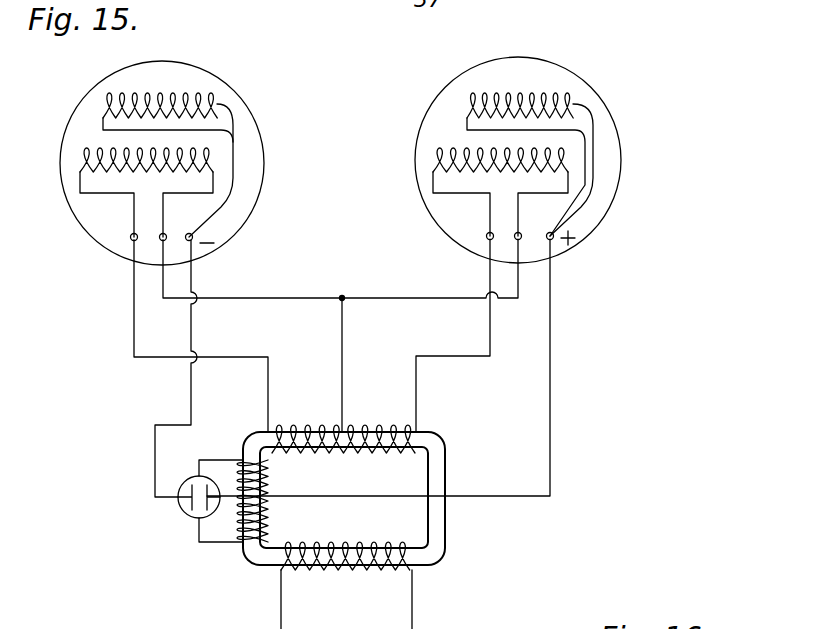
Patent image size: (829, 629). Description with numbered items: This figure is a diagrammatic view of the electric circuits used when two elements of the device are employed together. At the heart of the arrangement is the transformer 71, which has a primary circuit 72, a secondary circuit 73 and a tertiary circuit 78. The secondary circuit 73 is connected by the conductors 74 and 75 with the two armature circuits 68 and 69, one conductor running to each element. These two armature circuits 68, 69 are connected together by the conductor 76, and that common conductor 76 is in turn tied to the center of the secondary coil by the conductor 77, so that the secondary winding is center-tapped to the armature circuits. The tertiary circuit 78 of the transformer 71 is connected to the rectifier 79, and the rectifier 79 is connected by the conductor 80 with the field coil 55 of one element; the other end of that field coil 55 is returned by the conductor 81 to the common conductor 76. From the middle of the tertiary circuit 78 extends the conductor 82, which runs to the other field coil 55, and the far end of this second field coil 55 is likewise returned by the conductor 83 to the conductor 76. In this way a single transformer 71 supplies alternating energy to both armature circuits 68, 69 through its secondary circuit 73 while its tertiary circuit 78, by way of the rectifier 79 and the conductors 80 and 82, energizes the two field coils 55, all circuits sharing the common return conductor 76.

The field coil 55 is at (195, 97).
The armature circuit 69 is at (98, 153).
The armature circuit 68 is at (560, 158).
The conductor 81 is at (233, 147).
The conductor 83 is at (586, 188).
The conductor 80 is at (193, 279).
The conductor 76 is at (303, 297).
The conductor 74 is at (490, 272).
The conductor 75 is at (237, 357).
The conductor 77 is at (343, 332).
The secondary circuit 73 is at (368, 428).
The tertiary circuit 78 is at (268, 482).
The primary circuit 72 is at (353, 571).
The transformer 71 is at (417, 522).
The rectifier 79 is at (185, 512).
The conductor 82 is at (552, 453).